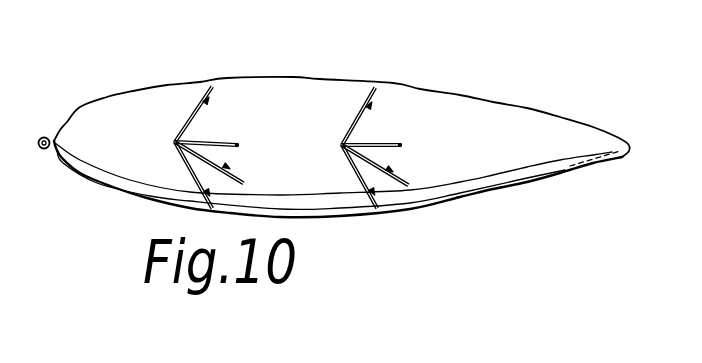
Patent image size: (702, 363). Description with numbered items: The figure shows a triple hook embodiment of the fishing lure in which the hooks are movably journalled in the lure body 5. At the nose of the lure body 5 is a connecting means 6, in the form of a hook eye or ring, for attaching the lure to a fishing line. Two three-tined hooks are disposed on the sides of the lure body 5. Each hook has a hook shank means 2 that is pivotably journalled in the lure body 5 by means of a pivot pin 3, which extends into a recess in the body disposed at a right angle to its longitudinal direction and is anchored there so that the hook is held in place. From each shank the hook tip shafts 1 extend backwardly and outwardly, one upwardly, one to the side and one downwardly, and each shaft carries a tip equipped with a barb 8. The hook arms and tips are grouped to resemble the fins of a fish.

The hook tip shaft 1 is at (226, 123).
The hook shank means 2 is at (397, 124).
The pivot pin 3 is at (408, 142).
The lure body 5 is at (533, 124).
The connecting means 6 is at (44, 137).
The barb 8 is at (212, 98).